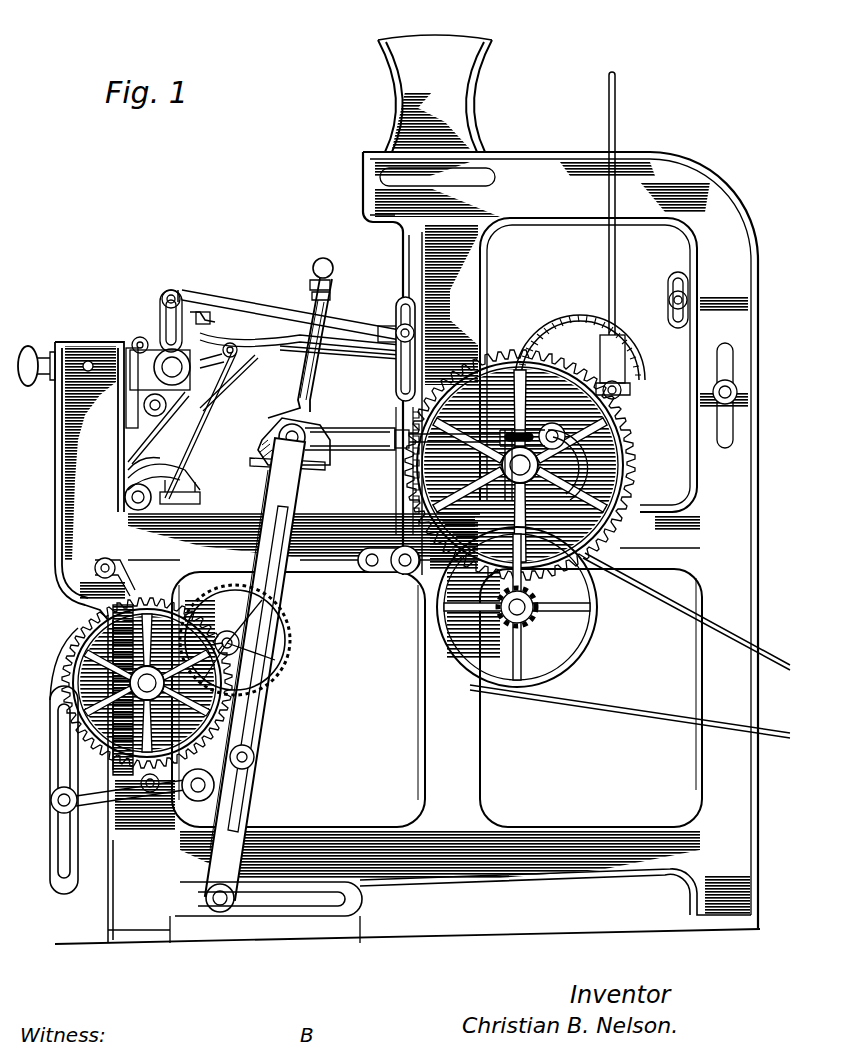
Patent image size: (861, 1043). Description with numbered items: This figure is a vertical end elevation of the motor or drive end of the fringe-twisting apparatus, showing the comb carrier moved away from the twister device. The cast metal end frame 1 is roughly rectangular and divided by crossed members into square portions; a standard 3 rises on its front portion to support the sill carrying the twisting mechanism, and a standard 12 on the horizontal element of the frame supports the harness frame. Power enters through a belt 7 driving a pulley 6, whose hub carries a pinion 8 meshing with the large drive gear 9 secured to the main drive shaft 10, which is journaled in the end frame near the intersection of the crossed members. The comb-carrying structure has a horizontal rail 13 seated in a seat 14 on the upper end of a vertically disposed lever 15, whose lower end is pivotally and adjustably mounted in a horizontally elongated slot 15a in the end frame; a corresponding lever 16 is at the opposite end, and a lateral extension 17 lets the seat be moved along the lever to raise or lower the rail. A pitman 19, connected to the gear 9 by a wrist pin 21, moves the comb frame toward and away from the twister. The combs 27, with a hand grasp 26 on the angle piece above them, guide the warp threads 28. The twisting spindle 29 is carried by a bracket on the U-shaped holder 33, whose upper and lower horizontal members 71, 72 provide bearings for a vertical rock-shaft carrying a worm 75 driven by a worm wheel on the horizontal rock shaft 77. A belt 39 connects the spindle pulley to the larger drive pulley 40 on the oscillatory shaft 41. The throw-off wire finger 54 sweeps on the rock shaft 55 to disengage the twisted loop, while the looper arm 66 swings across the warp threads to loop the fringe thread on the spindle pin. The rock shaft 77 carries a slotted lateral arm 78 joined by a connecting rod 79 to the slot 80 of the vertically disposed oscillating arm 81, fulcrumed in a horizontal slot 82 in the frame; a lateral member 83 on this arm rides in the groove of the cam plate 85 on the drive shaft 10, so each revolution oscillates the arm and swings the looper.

The end frame 1 is at (684, 163).
The standard 3 is at (70, 343).
The pulley 6 is at (592, 633).
The belt 7 is at (610, 702).
The pinion 8 is at (532, 622).
The drive gear 9 is at (630, 486).
The main drive shaft 10 is at (568, 470).
The standard 12 is at (475, 76).
The horizontal rail 13 is at (280, 419).
The seat 14 is at (255, 458).
The lever 15 is at (262, 786).
The horizontally elongated slot 15a is at (235, 915).
The lever 16 is at (282, 578).
The lateral extension 17 is at (292, 492).
The pitman 19 is at (370, 452).
The wrist pin 21 is at (618, 440).
The hand grasp 26 is at (333, 268).
The comb 27 is at (303, 305).
The warp threads 28 is at (355, 347).
The spindle 29 is at (300, 338).
The U-shaped holder 33 is at (128, 352).
The belt 39 is at (190, 470).
The drive pulley 40 is at (120, 470).
The oscillatory shaft 41 is at (128, 500).
The wire finger 54 is at (240, 366).
The rock shaft 55 is at (178, 408).
The looper arm 66 is at (226, 332).
The upper horizontal member 71 is at (158, 338).
The lower horizontal member 72 is at (168, 408).
The worm 75 is at (228, 385).
The rock shaft 77 is at (218, 415).
The lateral arm 78 is at (160, 304).
The connecting rod 79 is at (215, 298).
The slot 80 is at (440, 362).
The oscillating arm 81 is at (400, 508).
The slot 82 is at (400, 573).
The lateral member 83 is at (398, 424).
The cam plate 85 is at (570, 488).